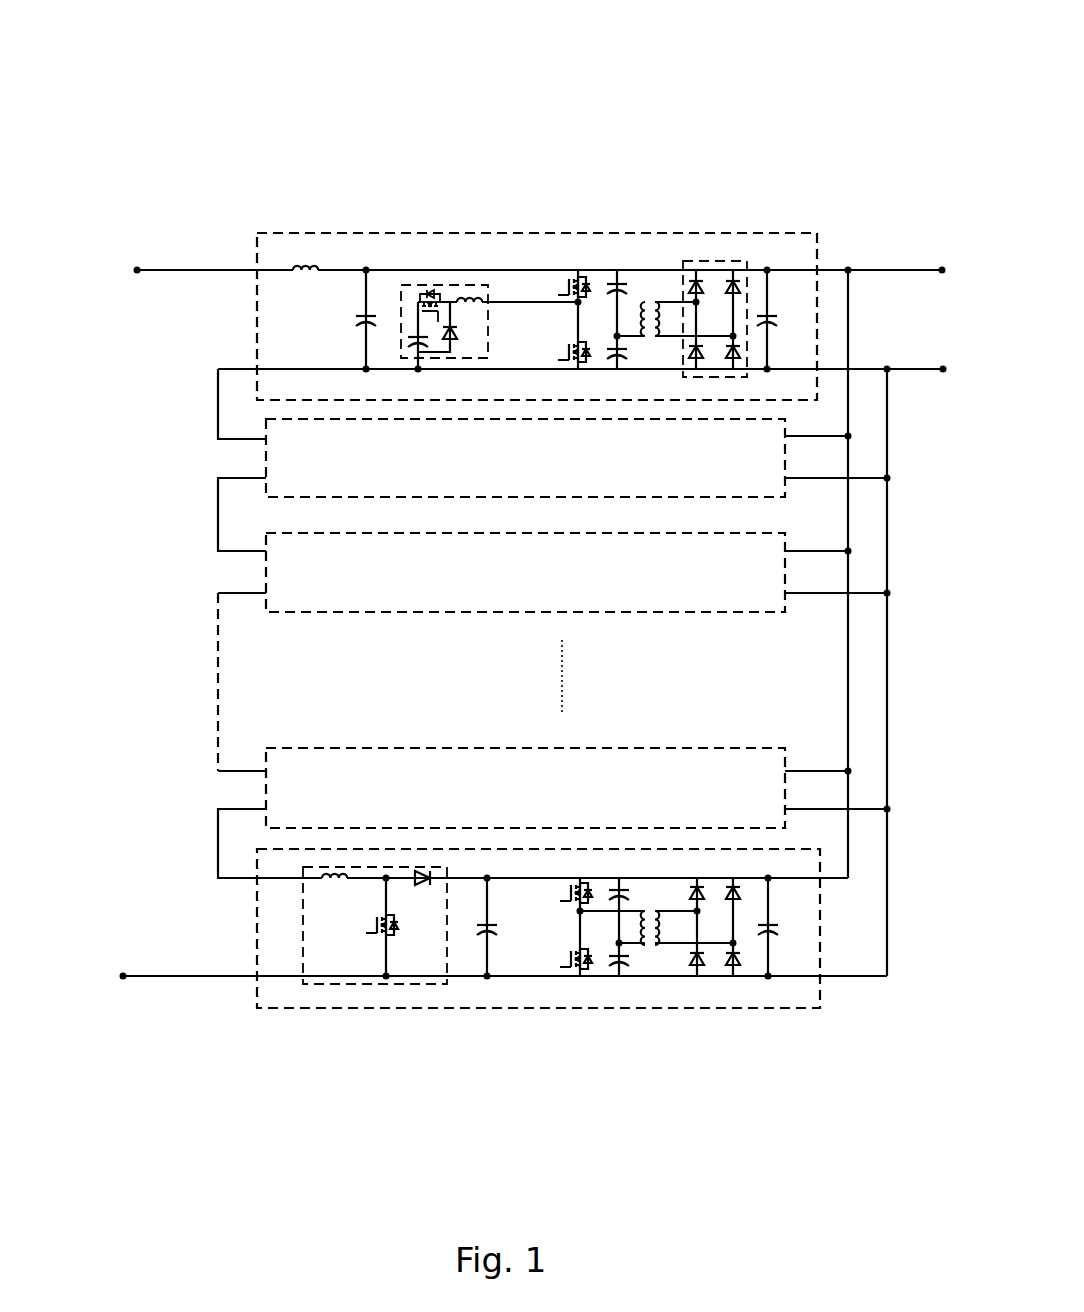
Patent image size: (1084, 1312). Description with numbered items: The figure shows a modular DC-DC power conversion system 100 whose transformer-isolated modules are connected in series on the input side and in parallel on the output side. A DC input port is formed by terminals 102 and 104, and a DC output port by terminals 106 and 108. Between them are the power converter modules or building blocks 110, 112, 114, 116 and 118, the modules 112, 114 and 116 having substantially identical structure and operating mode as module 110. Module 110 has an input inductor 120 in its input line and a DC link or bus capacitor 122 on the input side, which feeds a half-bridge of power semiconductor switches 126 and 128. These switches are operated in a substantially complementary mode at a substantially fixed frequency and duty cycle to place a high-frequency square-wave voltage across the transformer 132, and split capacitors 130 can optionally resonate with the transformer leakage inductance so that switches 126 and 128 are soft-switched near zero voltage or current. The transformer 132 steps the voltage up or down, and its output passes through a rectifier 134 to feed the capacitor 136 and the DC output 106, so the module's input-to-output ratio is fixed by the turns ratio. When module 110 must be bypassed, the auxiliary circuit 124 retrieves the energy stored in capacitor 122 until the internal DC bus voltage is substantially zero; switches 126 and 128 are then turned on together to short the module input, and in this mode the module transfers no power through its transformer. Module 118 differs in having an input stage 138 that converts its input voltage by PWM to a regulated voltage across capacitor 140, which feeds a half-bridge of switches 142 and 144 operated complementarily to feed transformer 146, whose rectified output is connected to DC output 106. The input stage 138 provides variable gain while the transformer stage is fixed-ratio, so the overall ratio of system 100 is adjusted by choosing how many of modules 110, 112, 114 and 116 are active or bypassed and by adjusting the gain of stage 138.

The power conversion system 100 is at (158, 108).
The DC input port terminal 102 is at (133, 283).
The DC input port terminal 104 is at (121, 965).
The DC output port terminal 106 is at (940, 258).
The DC output port terminal 108 is at (942, 382).
The power converter module 110 is at (268, 228).
The power converter module 112 is at (260, 455).
The power converter module 114 is at (260, 572).
The power converter module 116 is at (260, 780).
The power converter module 118 is at (278, 1012).
The input inductor 120 is at (307, 260).
The DC link capacitor 122 is at (358, 302).
The auxiliary circuit 124 is at (420, 283).
The power semiconductor switch 126 is at (559, 343).
The power semiconductor switch 128 is at (556, 278).
The split capacitors 130 is at (624, 273).
The transformer 132 is at (648, 298).
The rectifier 134 is at (722, 256).
The capacitor 136 is at (772, 310).
The input stage 138 is at (401, 990).
The capacitor 140 is at (478, 954).
The switch 142 is at (561, 917).
The switch 144 is at (564, 972).
The transformer 146 is at (649, 950).